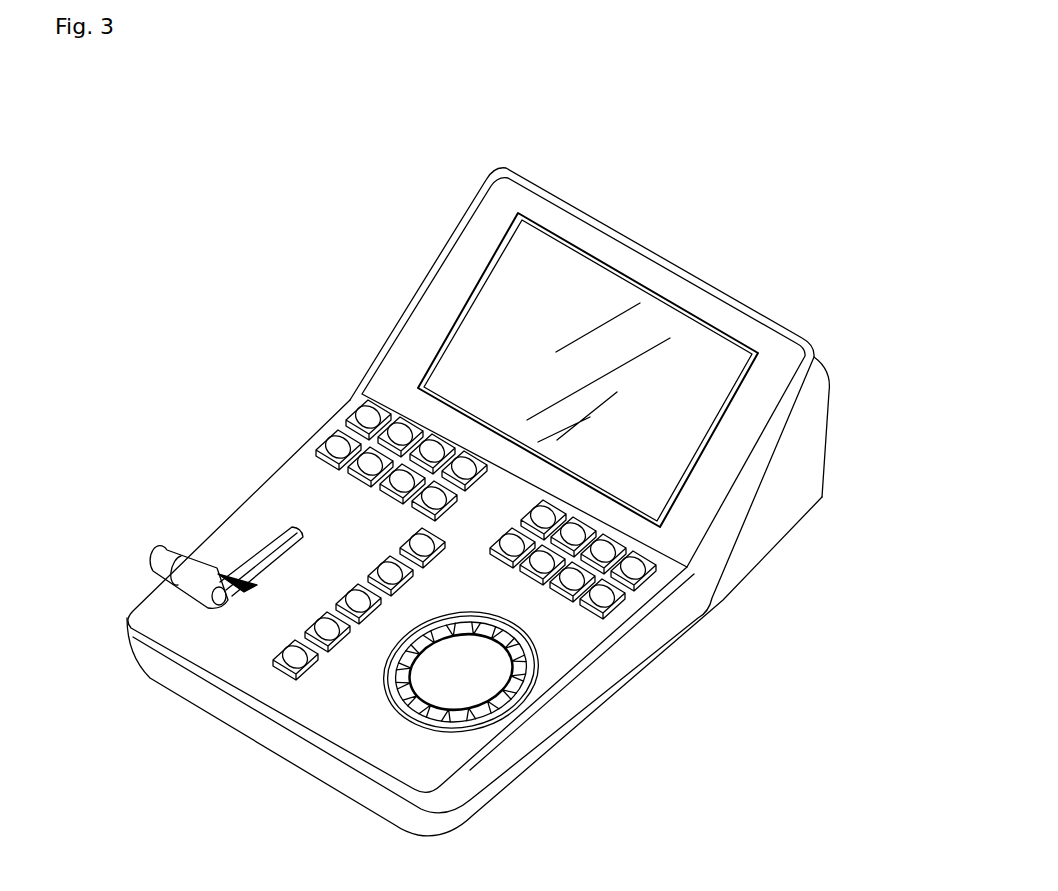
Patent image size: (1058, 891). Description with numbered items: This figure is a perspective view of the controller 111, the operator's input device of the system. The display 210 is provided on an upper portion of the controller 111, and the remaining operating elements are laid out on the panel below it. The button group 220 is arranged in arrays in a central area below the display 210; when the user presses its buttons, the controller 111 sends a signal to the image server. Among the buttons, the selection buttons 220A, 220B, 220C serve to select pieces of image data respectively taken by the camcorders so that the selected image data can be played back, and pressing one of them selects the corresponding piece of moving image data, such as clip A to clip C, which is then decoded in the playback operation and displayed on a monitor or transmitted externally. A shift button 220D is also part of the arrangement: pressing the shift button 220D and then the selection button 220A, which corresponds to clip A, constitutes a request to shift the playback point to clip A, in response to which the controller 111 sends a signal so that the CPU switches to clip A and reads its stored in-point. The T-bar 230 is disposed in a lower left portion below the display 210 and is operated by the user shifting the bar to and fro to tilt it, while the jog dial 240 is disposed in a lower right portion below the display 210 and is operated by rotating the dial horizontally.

The controller 111 is at (636, 194).
The display 210 is at (690, 345).
The button group 220 is at (362, 601).
The selection button 220A is at (369, 420).
The selection button 220B is at (403, 433).
The selection button 220C is at (432, 440).
The shift button 220D is at (337, 450).
The T-bar 230 is at (156, 550).
The jog dial 240 is at (484, 684).